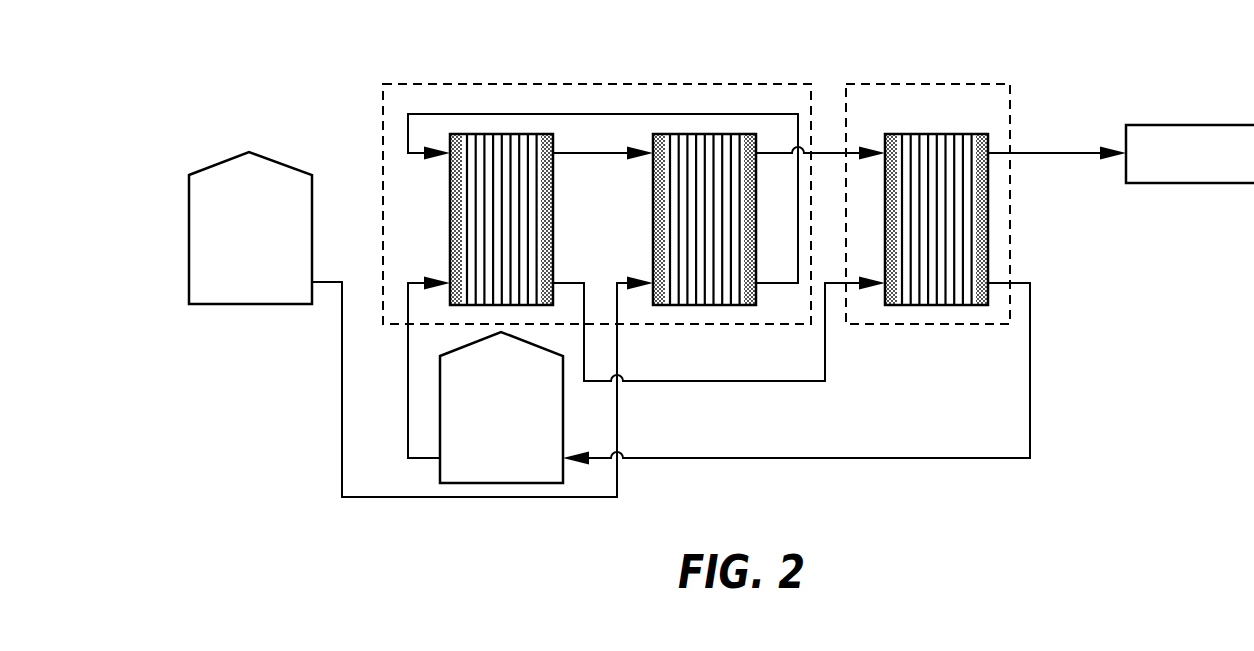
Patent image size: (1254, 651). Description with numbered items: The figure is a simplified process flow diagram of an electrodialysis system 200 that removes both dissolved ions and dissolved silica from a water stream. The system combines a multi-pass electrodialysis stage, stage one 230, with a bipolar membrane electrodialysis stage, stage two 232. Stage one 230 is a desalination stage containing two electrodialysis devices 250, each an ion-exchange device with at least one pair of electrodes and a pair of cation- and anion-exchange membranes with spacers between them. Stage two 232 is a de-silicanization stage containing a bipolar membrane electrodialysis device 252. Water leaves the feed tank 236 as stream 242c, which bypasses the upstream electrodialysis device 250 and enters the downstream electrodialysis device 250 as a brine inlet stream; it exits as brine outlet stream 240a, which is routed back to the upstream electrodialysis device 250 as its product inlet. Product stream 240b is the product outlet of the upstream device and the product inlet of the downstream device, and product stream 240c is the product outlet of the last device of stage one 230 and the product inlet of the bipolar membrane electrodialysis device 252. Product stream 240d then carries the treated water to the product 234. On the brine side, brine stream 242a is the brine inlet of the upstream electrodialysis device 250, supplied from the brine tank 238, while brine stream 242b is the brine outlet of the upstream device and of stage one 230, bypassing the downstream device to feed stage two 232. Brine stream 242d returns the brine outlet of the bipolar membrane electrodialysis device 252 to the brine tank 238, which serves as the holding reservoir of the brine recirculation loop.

The electrodialysis system 200 is at (258, 70).
The stage one 230 is at (445, 84).
The stage two 232 is at (912, 84).
The product 234 is at (1206, 125).
The feed tank 236 is at (228, 168).
The brine tank 238 is at (510, 483).
The brine outlet stream 240a is at (407, 137).
The product stream 240b is at (605, 153).
The product stream 240c is at (832, 153).
The product stream 240d is at (1092, 150).
The brine stream 242a is at (408, 390).
The brine stream 242b is at (755, 382).
The stream 242c is at (342, 435).
The brine stream 242d is at (1030, 420).
The electrodialysis device 250 is at (508, 150).
The bipolar membrane electrodialysis device 252 is at (942, 134).